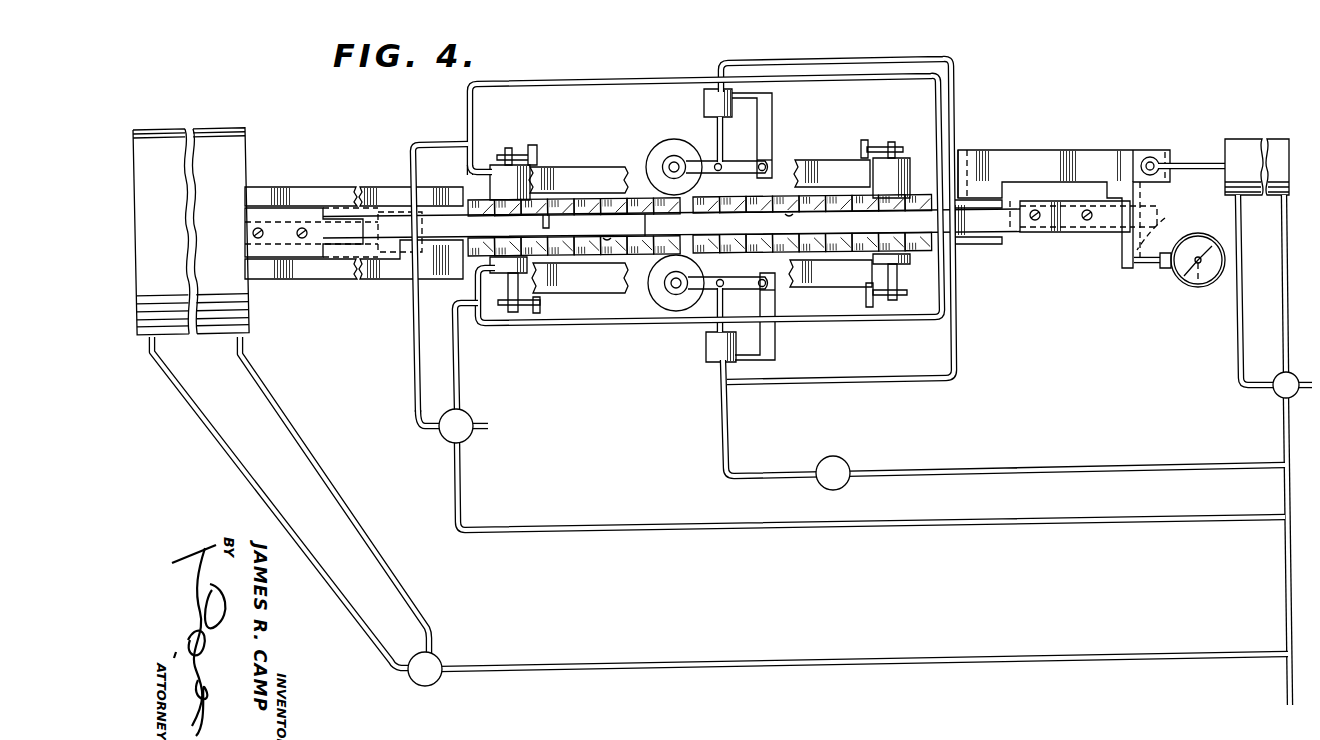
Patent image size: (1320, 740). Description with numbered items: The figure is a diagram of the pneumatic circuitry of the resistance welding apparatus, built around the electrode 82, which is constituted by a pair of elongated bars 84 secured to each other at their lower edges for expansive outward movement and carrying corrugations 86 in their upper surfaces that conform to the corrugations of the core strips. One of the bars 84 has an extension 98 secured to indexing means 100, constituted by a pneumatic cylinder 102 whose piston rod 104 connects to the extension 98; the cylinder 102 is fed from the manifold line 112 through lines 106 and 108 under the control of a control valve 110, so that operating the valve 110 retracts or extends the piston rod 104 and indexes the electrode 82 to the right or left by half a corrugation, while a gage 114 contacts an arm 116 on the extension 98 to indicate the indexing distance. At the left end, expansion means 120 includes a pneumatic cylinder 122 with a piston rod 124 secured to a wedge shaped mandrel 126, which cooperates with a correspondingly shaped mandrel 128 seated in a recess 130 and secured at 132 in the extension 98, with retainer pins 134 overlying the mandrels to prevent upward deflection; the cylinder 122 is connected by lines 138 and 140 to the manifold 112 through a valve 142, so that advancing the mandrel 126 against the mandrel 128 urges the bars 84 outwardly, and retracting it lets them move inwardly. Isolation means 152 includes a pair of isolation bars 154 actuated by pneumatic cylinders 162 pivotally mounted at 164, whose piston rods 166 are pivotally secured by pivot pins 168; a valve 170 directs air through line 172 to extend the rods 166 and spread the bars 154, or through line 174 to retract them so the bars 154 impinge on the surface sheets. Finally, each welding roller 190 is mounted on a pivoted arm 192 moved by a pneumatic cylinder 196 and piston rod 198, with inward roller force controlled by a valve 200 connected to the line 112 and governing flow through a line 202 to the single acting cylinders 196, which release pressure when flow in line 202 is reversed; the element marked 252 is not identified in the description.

The electrode 82 is at (644, 260).
The elongated bars 84 is at (1003, 166).
The corrugations 86 is at (929, 196).
The extension 98 is at (1119, 162).
The indexing means 100 is at (1279, 134).
The pneumatic cylinder 102 is at (1243, 150).
The piston rod 104 is at (1191, 165).
The line 106 is at (1238, 344).
The line 108 is at (1285, 332).
The control valve 110 is at (1273, 394).
The manifold line 112 is at (1287, 578).
The gage 114 is at (1194, 279).
The arm 116 is at (1118, 281).
The expansion means 120 is at (209, 126).
The pneumatic cylinder 122 is at (222, 150).
The piston rod 124 is at (292, 216).
The wedge shaped mandrel 126 is at (408, 234).
The wedge shaped mandrel 128 is at (967, 224).
The recess 130 is at (1013, 222).
The securing point 132 is at (1067, 230).
The retainer pins 134 is at (547, 224).
The line 138 is at (361, 630).
The line 140 is at (402, 584).
The valve 142 is at (443, 656).
The isolation means 152 is at (844, 158).
The isolation bars 154 is at (566, 283).
The pneumatic cylinders 162 is at (512, 179).
The pivotal mounting 164 is at (518, 162).
The piston rods 166 is at (511, 310).
The pivot pins 168 is at (528, 312).
The valve 170 is at (441, 436).
The line 172 is at (413, 331).
The line 174 is at (456, 382).
The welding roller 190 is at (658, 152).
The pivoted arm 192 is at (739, 161).
The pneumatic cylinder 196 is at (712, 100).
The piston rod 198 is at (717, 131).
The valve 200 is at (846, 464).
The line 202 is at (957, 353).
The pin 252 is at (608, 240).